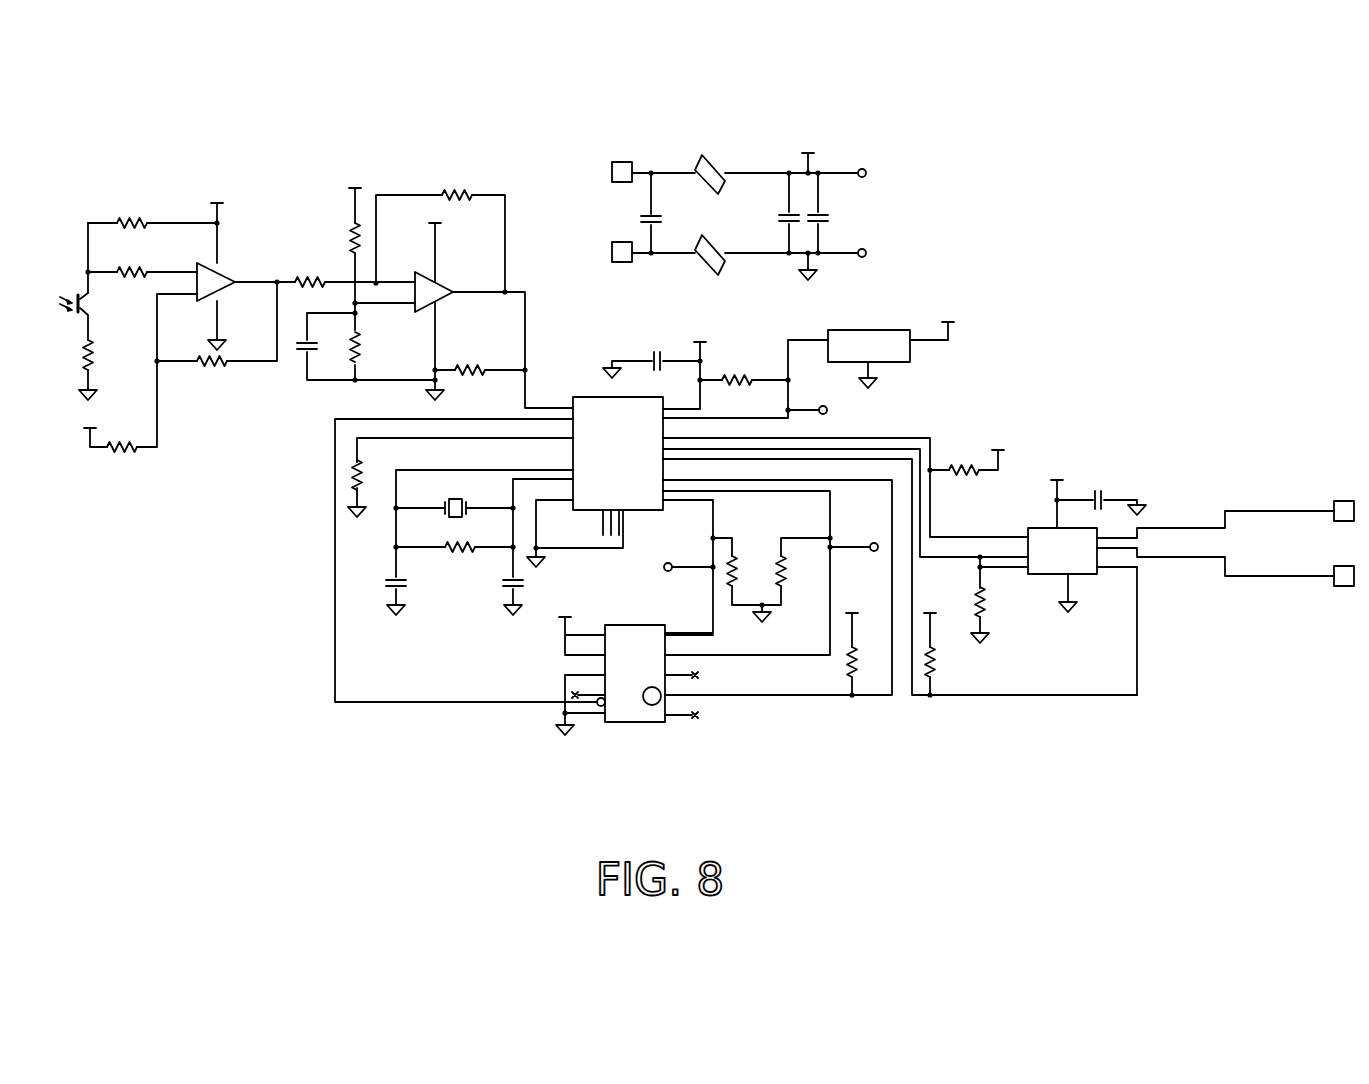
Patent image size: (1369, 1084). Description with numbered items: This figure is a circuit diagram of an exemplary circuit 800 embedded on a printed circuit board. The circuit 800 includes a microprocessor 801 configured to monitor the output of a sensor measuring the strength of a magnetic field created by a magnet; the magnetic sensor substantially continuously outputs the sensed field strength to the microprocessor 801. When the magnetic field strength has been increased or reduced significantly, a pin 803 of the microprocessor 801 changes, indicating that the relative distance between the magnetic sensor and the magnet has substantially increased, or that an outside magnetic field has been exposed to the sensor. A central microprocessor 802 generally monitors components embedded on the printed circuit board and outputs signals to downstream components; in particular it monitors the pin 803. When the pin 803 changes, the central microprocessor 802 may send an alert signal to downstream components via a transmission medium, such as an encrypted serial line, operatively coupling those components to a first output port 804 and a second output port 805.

The circuit 800 is at (216, 660).
The microprocessor 801 is at (613, 722).
The central microprocessor 802 is at (588, 397).
The pin 803 is at (655, 722).
The first output port 804 is at (1330, 501).
The second output port 805 is at (1330, 587).